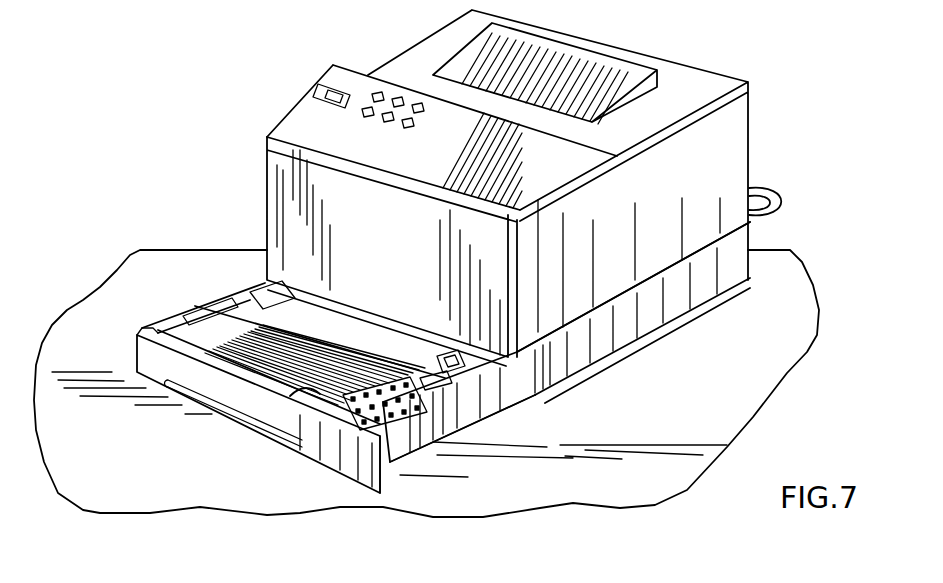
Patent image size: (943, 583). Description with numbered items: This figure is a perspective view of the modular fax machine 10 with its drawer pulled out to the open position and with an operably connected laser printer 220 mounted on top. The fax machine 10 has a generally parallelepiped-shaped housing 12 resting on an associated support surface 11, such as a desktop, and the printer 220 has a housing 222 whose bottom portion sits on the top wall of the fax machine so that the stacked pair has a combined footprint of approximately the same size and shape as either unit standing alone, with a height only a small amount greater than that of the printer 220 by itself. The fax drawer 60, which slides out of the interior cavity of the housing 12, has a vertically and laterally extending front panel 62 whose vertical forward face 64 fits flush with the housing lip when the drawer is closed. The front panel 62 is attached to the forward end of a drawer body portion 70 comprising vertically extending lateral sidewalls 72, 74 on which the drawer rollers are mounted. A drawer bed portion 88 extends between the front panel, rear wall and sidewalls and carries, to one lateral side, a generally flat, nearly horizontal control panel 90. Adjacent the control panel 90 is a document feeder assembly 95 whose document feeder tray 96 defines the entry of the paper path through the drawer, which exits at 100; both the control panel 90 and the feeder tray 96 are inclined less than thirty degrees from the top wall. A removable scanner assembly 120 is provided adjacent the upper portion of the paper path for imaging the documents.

The modular fax machine 10 is at (797, 242).
The support surface 11 is at (694, 406).
The housing 12 is at (712, 265).
The fax drawer 60 is at (139, 324).
The front panel 62 is at (385, 493).
The vertical forward face 64 is at (150, 366).
The drawer body portion 70 is at (457, 424).
The lateral sidewall 72 is at (425, 441).
The lateral sidewall 74 is at (200, 318).
The drawer bed portion 88 is at (223, 346).
The control panel 90 is at (392, 410).
The document feeder assembly 95 is at (297, 390).
The document feeder tray 96 is at (187, 323).
The paper path exit 100 is at (198, 401).
The scanner assembly 120 is at (263, 300).
The printer 220 is at (320, 81).
The printer housing 222 is at (742, 137).